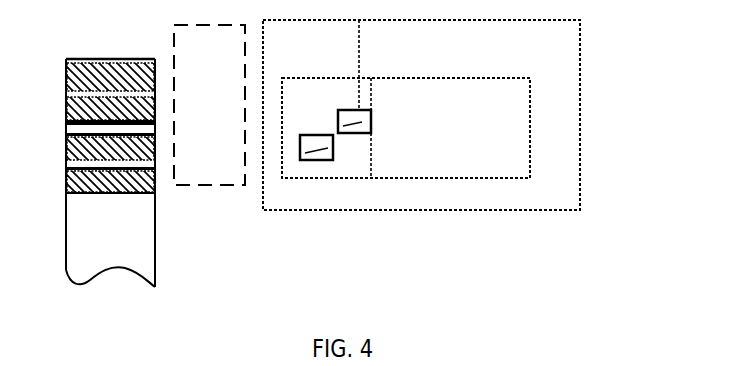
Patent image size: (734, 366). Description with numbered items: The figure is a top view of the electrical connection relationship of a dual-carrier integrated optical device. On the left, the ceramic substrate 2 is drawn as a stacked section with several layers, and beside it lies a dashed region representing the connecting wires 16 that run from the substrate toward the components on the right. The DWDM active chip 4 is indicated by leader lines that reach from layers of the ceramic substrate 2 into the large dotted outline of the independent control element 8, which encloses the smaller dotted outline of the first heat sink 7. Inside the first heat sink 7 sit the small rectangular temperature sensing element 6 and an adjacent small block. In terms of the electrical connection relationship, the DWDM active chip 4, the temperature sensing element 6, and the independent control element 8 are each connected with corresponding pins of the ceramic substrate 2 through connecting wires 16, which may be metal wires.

The ceramic substrate 2 is at (118, 58).
The DWDM active chip 4 is at (156, 175).
The connecting wire 16 is at (206, 190).
The independent control element 8 is at (522, 45).
The first heat sink 7 is at (497, 165).
The temperature sensing element 6 is at (313, 160).